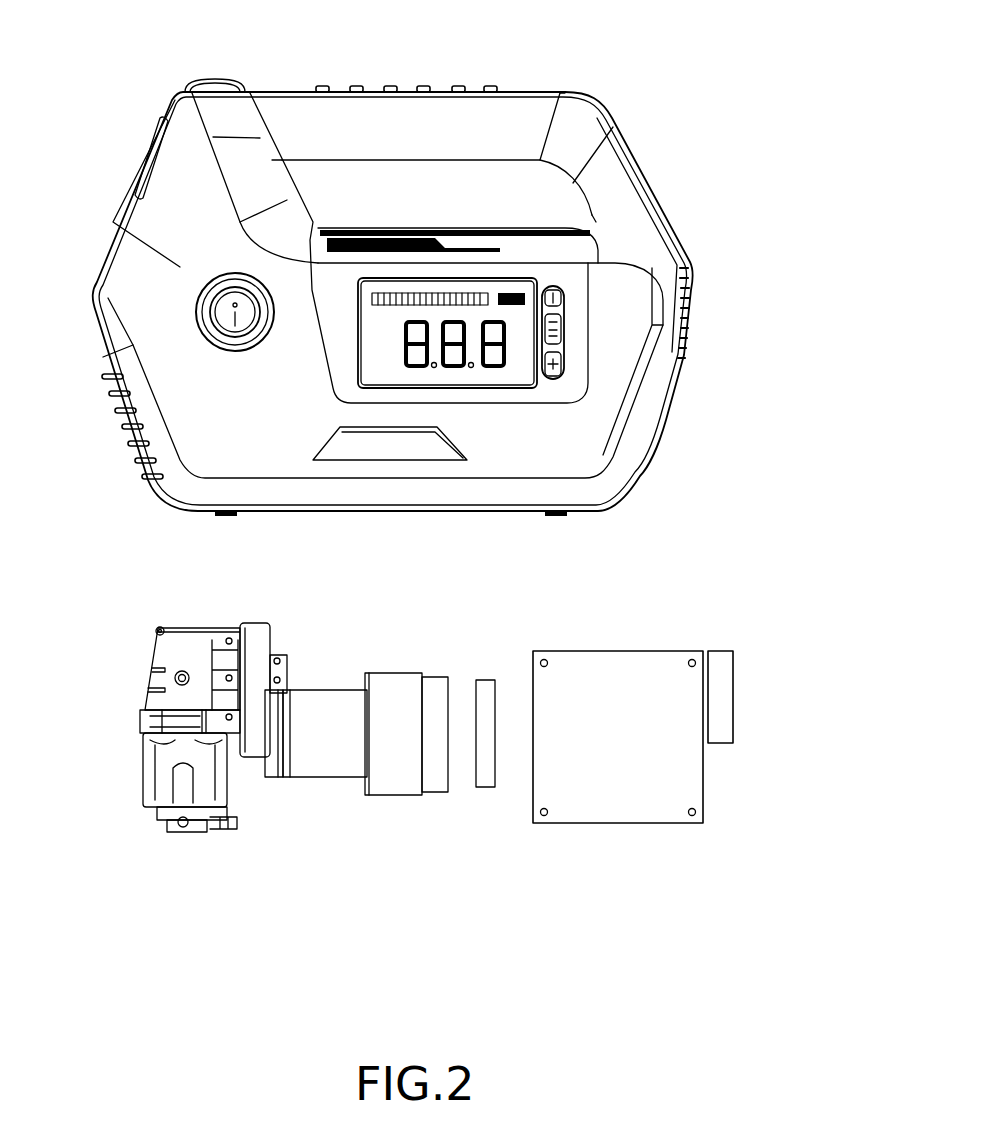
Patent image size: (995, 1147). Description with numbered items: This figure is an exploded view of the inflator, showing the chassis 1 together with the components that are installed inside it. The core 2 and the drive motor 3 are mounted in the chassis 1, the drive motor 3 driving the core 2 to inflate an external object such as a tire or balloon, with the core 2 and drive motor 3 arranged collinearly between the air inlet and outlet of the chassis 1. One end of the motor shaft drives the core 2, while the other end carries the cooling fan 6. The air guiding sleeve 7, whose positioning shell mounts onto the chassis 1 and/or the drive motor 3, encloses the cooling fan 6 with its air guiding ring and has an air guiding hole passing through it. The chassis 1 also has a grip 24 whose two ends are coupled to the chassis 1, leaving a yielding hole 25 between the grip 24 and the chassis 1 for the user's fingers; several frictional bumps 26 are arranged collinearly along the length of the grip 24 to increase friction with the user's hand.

The chassis 1 is at (257, 440).
The core 2 is at (198, 677).
The drive motor 3 is at (345, 753).
The cooling fan 6 is at (487, 770).
The air guiding sleeve 7 is at (398, 773).
The grip 24 is at (522, 123).
The yielding hole 25 is at (543, 207).
The frictional bump 26 is at (322, 88).